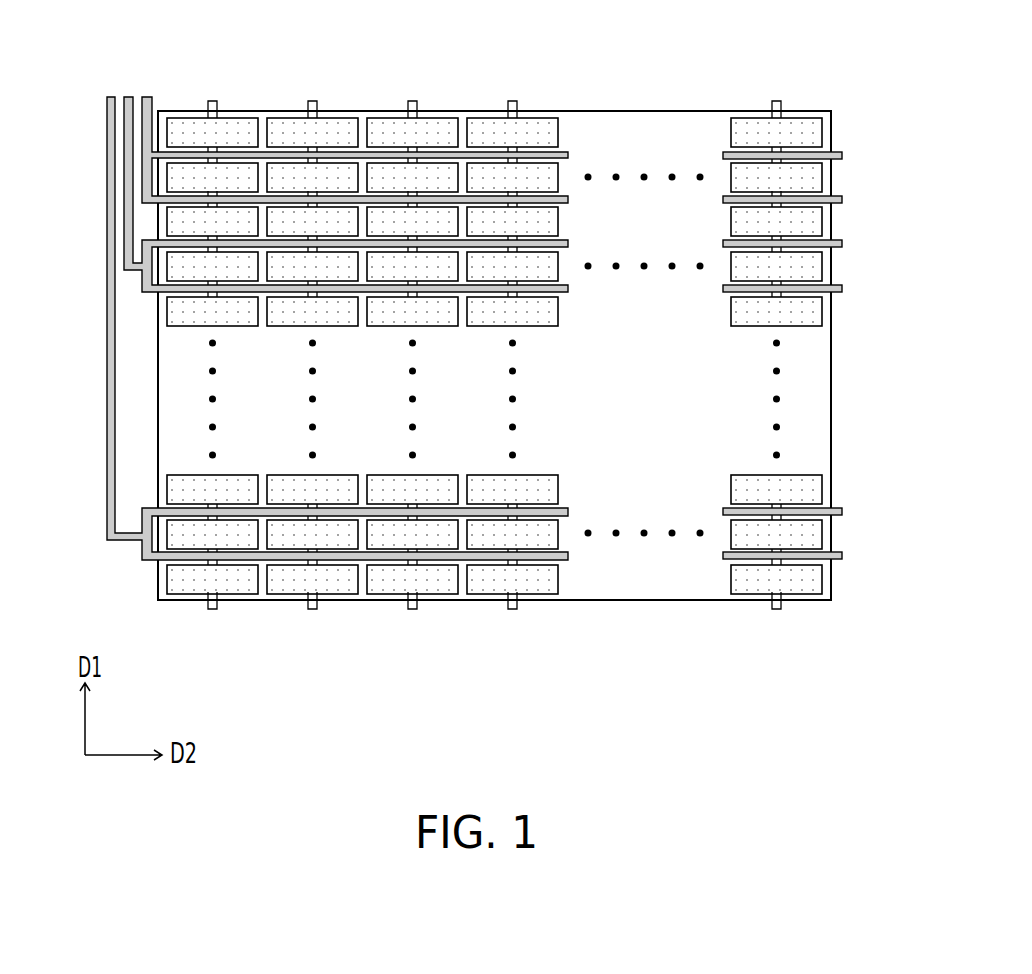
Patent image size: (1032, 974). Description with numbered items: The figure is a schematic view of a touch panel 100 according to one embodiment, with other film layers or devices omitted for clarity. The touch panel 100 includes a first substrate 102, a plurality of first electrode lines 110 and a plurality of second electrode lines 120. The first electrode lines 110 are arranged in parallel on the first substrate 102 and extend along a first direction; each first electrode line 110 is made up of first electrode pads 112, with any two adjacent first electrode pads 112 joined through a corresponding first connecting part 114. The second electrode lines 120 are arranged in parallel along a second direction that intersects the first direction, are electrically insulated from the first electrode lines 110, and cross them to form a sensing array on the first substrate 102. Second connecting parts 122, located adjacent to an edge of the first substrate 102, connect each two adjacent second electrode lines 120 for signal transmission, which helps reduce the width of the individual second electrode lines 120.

The touch panel 100 is at (723, 708).
The first substrate 102 is at (655, 110).
The first electrode lines 110 is at (319, 92).
The first electrode pads 112 is at (250, 118).
The first connecting parts 114 is at (219, 104).
The second electrode lines 120 is at (842, 155).
The second connecting parts 122 is at (151, 92).